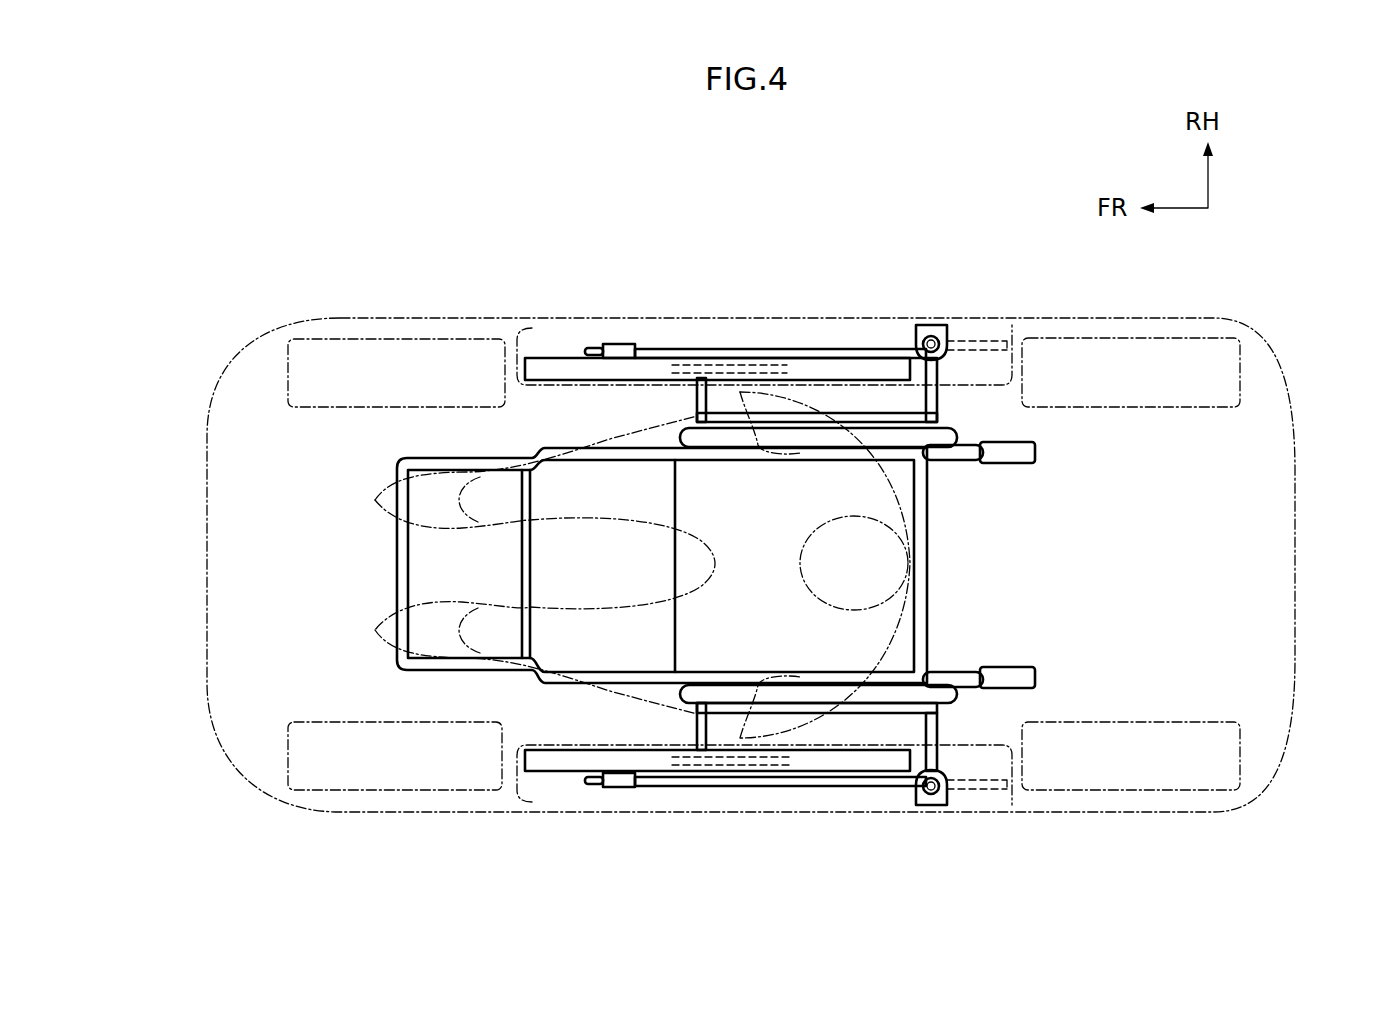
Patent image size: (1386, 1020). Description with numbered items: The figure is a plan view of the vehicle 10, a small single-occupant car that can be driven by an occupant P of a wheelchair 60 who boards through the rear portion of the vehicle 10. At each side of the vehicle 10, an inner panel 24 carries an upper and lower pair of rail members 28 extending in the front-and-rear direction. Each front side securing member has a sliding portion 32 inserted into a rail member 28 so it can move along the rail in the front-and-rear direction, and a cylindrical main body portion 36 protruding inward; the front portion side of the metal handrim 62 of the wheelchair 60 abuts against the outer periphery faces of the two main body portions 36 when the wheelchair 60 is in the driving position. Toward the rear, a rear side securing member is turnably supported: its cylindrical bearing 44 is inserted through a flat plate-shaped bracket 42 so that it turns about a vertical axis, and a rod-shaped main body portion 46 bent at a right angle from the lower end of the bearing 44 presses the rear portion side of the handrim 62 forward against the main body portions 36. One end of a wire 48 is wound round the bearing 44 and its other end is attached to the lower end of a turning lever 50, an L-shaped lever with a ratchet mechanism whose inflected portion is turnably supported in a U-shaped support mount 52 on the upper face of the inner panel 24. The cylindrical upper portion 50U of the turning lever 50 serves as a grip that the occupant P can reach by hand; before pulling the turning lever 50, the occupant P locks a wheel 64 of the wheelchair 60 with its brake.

The vehicle 10 is at (338, 318).
The inner panel 24 is at (1035, 387).
The rail member 28 is at (525, 368).
The sliding portion 32 is at (740, 368).
The main body portion 36 is at (697, 392).
The bracket 42 is at (928, 326).
The bearing 44 is at (947, 343).
The main body portion 46 is at (938, 405).
The wire 48 is at (807, 348).
The turning lever 50 is at (619, 567).
The upper portion 50U is at (586, 346).
The support mount 52 is at (634, 345).
The wheelchair 60 is at (396, 565).
The handrim 62 is at (893, 415).
The wheel 64 is at (953, 443).
The occupant P is at (893, 565).